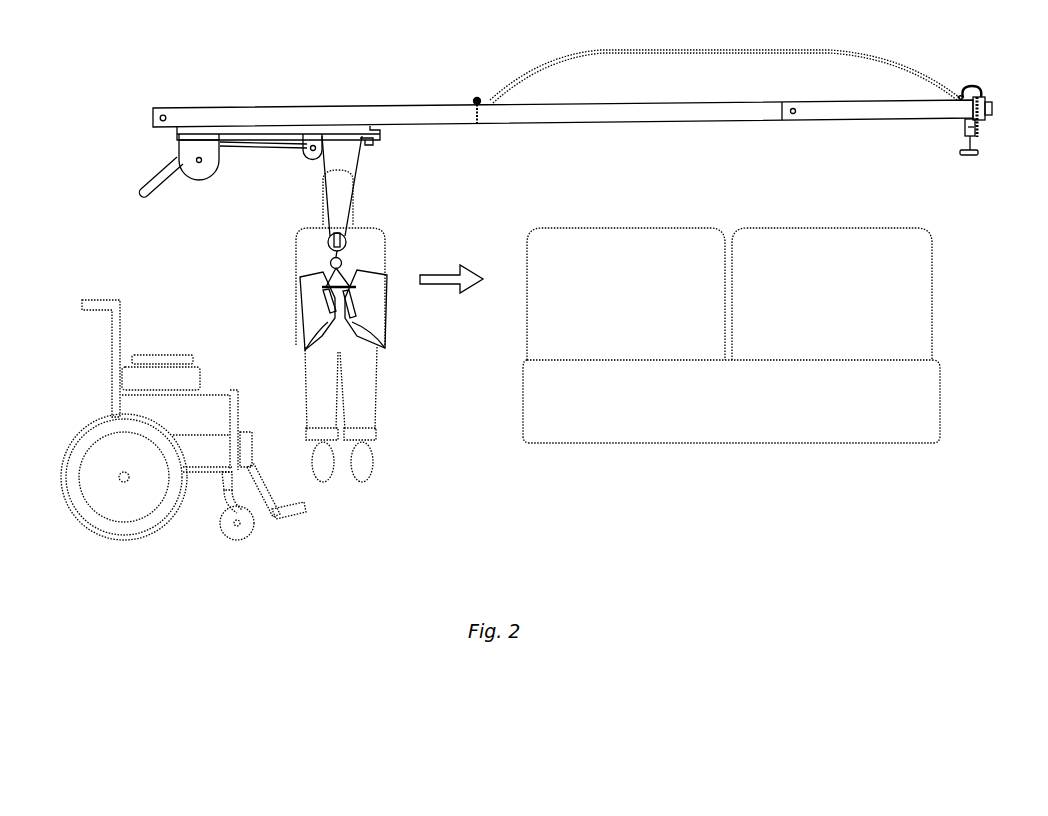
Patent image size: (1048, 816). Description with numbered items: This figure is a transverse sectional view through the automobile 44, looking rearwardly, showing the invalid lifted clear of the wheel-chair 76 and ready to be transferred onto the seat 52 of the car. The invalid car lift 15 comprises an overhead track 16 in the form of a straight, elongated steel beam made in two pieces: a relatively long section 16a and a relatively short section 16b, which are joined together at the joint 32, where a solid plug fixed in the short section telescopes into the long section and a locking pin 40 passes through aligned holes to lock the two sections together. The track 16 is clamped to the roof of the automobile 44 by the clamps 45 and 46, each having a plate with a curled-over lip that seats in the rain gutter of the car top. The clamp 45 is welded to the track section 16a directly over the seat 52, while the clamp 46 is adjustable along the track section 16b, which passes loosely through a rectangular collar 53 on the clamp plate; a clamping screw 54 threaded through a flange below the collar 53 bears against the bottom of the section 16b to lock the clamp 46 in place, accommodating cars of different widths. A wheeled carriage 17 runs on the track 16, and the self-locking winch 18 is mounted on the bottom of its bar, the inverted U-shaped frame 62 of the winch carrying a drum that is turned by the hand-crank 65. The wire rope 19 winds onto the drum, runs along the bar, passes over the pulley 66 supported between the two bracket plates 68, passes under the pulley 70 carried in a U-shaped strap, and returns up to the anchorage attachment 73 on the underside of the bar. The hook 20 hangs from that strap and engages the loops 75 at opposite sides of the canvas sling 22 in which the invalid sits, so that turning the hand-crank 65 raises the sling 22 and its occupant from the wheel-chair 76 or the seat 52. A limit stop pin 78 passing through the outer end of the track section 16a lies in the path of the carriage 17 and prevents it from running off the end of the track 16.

The invalid car lift 15 is at (131, 117).
The overhead track 16 is at (421, 100).
The long track section 16a is at (508, 117).
The short track section 16b is at (875, 113).
The wheeled carriage 17 is at (257, 142).
The winch 18 is at (183, 177).
The wire rope 19 is at (356, 178).
The hook 20 is at (348, 269).
The canvas sling 22 is at (301, 292).
The joint 32 is at (780, 115).
The locking pin 40 is at (795, 107).
The automobile 44 is at (595, 52).
The clamp 45 is at (476, 99).
The clamp 46 is at (985, 90).
The seat 52 is at (660, 360).
The rectangular collar 53 is at (993, 110).
The clamping screw 54 is at (975, 174).
The inverted U-shaped frame 62 is at (201, 163).
The hand-crank 65 is at (160, 178).
The pulley 66 is at (304, 158).
The bracket plates 68 is at (316, 138).
The pulley 70 is at (329, 243).
The anchorage attachment 73 is at (375, 148).
The loops 75 is at (347, 303).
The wheel-chair 76 is at (155, 356).
The limit stop pin 78 is at (166, 116).